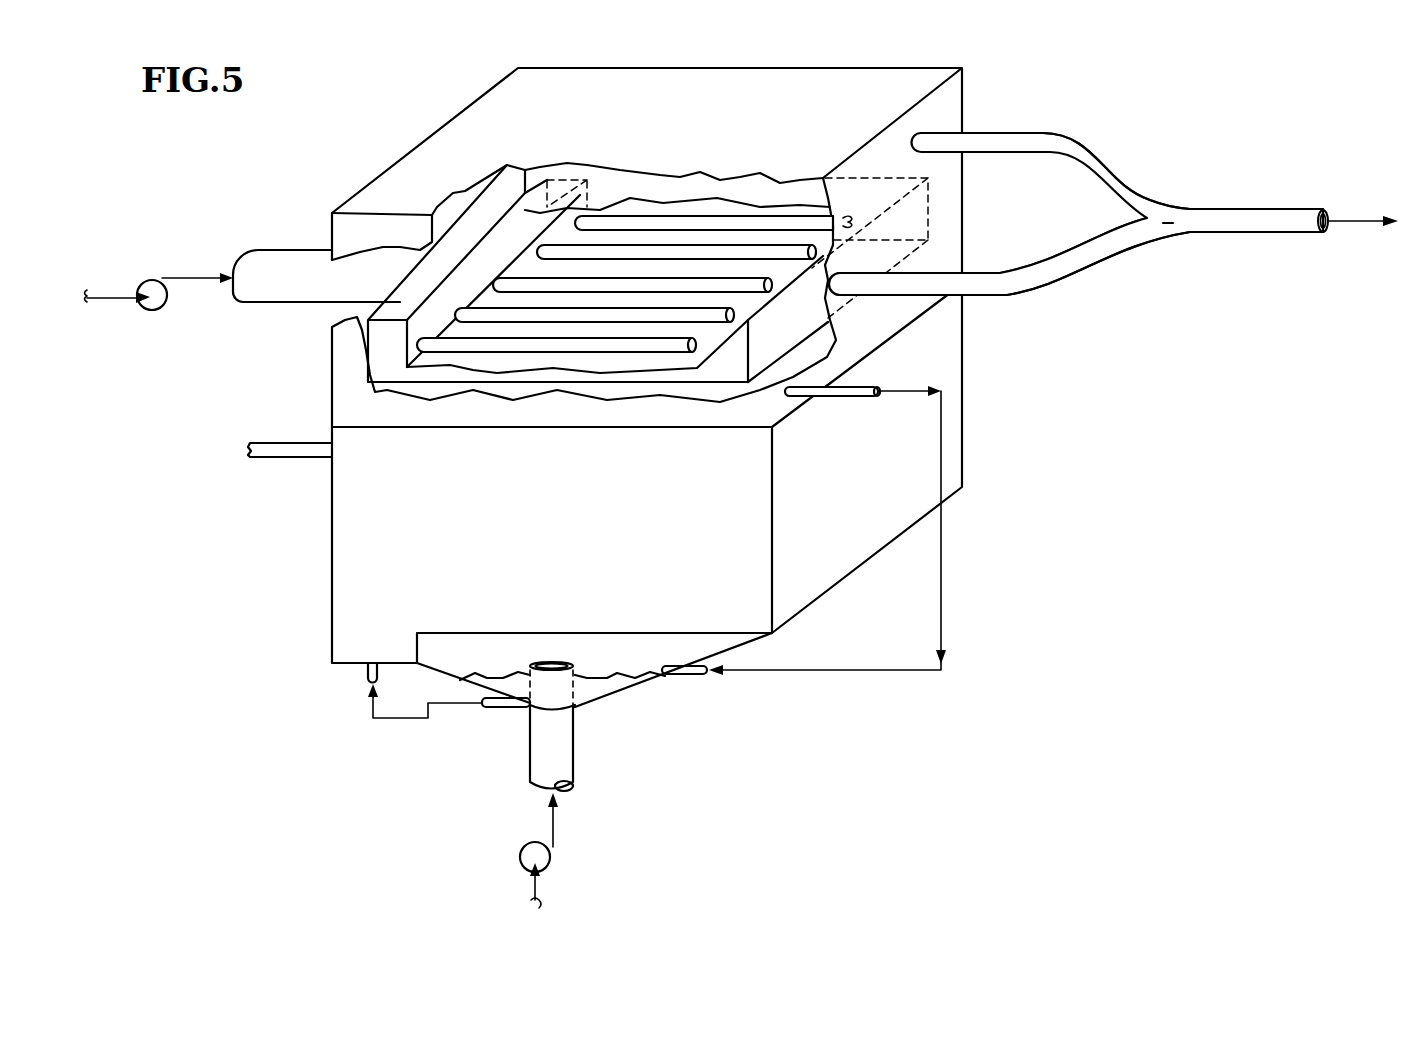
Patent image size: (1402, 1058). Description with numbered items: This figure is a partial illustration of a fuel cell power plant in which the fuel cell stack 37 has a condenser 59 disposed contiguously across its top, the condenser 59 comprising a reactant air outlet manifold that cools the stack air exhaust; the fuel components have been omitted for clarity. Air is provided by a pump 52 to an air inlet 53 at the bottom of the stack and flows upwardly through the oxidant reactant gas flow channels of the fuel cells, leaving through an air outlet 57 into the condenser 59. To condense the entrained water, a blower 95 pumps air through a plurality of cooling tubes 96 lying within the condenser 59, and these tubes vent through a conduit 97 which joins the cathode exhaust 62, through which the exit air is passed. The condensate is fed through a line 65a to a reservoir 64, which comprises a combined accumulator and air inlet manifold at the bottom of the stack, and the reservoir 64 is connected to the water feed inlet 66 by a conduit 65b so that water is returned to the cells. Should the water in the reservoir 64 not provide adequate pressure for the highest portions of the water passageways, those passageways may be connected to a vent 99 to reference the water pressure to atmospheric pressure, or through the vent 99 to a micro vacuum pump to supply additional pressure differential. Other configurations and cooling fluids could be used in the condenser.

The fuel cell stack 37 is at (322, 541).
The condenser 59 is at (597, 77).
The reservoir 64 is at (350, 410).
The cooling tubes 96 is at (670, 283).
The blower 95 is at (167, 289).
The vent 99 is at (292, 447).
The conduit 97 is at (1025, 278).
The air outlet 57 is at (1108, 172).
The exhaust 62 is at (1108, 172).
The line 65a is at (942, 587).
The water feed inlet 66 is at (367, 678).
The conduit 65b is at (417, 720).
The air inlet 53 is at (573, 727).
The pump 52 is at (527, 846).